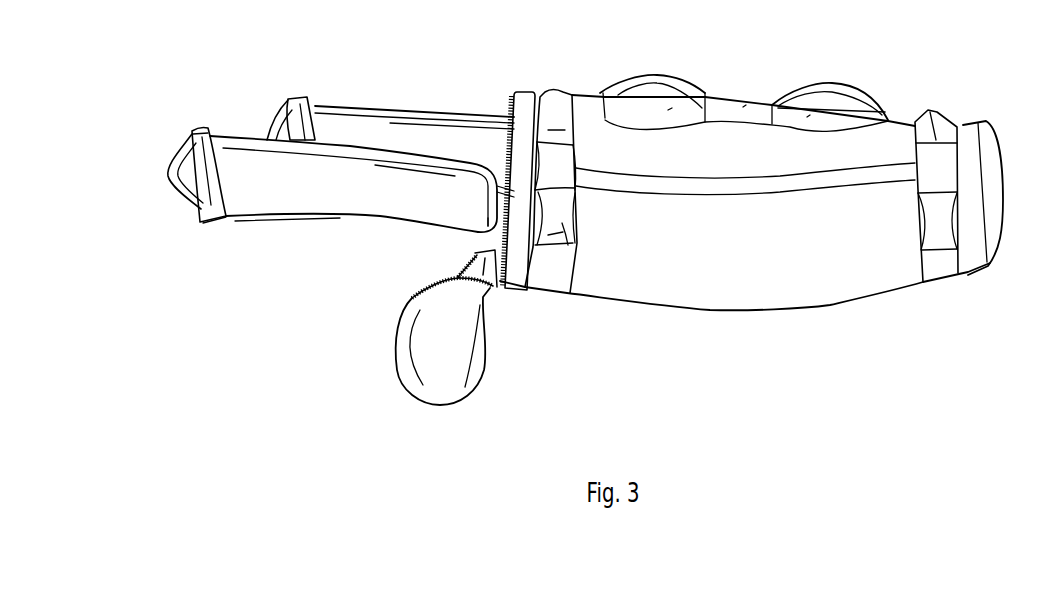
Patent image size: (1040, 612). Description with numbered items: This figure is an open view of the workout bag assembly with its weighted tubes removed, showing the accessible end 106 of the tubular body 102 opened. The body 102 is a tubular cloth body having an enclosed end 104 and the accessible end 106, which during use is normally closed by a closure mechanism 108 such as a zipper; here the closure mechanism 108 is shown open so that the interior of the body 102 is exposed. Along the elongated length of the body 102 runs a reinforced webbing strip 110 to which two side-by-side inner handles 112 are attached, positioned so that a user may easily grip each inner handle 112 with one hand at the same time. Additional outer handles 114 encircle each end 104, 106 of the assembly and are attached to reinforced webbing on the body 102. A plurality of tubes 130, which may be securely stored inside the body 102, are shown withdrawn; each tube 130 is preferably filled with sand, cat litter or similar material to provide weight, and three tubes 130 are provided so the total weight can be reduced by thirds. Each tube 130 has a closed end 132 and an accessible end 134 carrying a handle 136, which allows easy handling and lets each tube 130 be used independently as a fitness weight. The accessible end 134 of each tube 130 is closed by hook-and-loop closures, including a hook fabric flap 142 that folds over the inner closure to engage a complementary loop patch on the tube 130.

The tubular body 102 is at (763, 286).
The enclosed end 104 is at (986, 129).
The accessible end 106 is at (527, 102).
The closure mechanism 108 is at (512, 96).
The reinforced webbing strip 110 is at (807, 117).
The inner handles 112 is at (677, 85).
The outer handles 114 is at (556, 95).
The tubes 130 is at (410, 128).
The closed end 132 is at (480, 228).
The accessible end 134 is at (222, 223).
The handle 136 is at (185, 133).
The hook fabric flap 142 is at (203, 131).